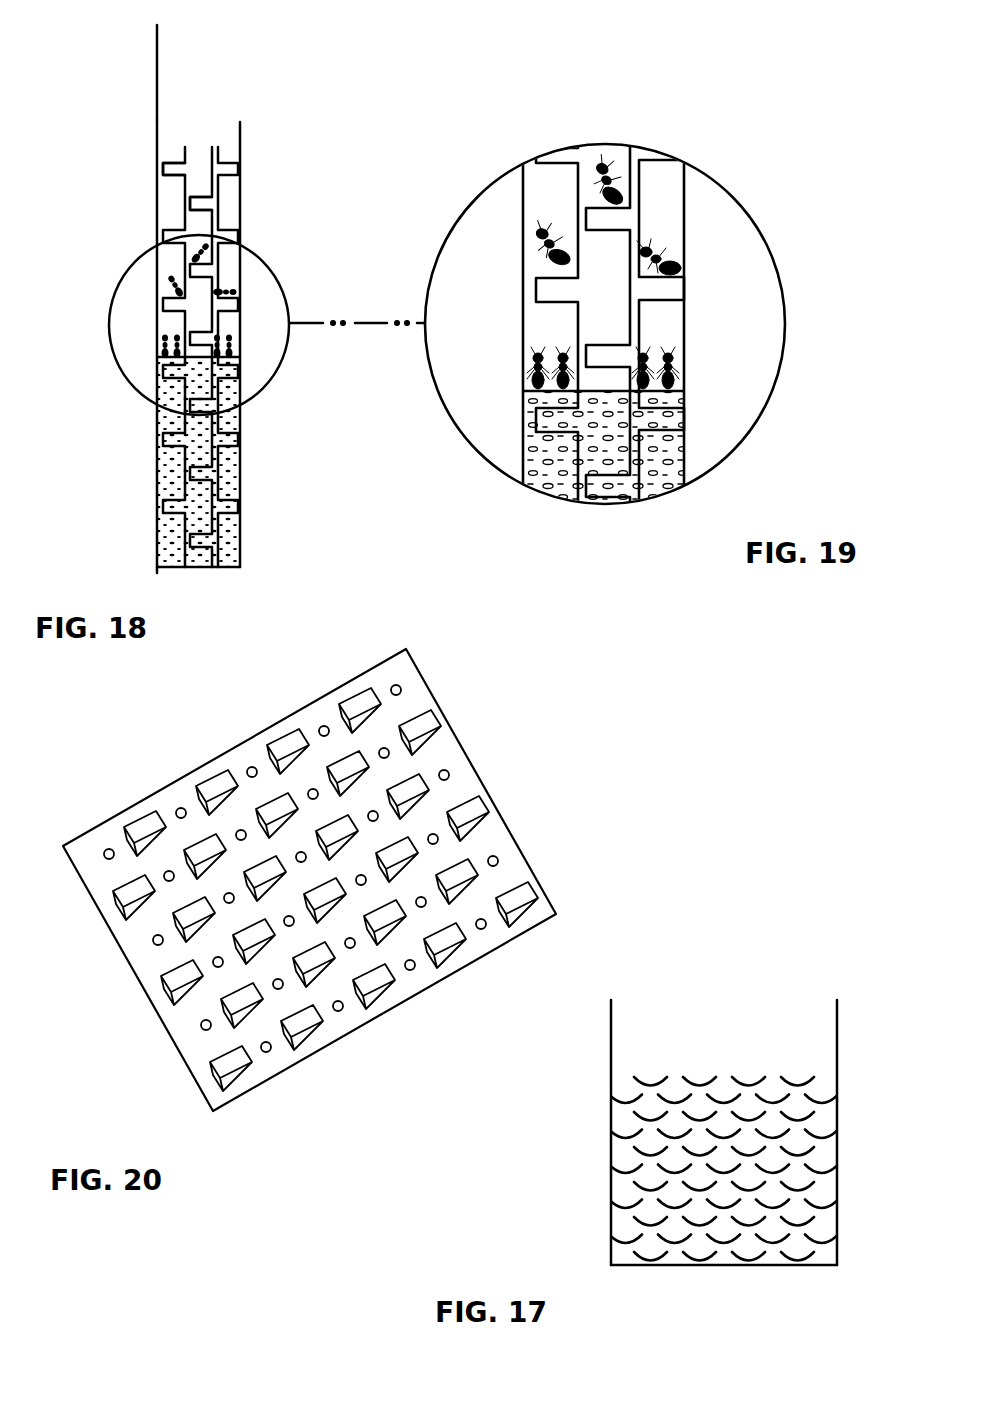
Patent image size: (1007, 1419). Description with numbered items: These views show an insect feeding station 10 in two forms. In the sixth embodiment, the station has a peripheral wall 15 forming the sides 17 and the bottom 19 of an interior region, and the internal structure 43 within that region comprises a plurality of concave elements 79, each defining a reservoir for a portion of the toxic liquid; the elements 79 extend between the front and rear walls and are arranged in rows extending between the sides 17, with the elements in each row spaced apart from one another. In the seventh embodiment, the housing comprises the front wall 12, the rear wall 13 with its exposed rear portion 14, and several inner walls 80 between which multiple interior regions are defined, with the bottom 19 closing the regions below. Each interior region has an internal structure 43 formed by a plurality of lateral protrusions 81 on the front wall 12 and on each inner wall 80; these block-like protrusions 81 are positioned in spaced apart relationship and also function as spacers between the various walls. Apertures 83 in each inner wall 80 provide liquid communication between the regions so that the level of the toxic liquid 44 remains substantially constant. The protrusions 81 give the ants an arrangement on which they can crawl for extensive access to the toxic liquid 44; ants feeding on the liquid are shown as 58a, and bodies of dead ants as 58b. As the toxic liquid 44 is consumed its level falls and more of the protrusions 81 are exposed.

In FIG. 18, the insect feeding station 10 is at (140, 68).
In FIG. 18, the front wall 12 is at (240, 132).
In FIG. 19, the front wall 12 is at (684, 182).
In FIG. 18, the rear wall 13 is at (157, 60).
In FIG. 18, the exposed rear portion 14 is at (157, 92).
In FIG. 17, the peripheral wall 15 is at (837, 1030).
In FIG. 17, the sides 17 is at (838, 1218).
In FIG. 18, the bottom 19 is at (183, 568).
In FIG. 17, the bottom 19 is at (782, 1266).
In FIG. 18, the internal structure 43 is at (202, 133).
In FIG. 17, the internal structure 43 is at (660, 1068).
In FIG. 18, the toxic liquid 44 is at (238, 488).
In FIG. 19, the toxic liquid 44 is at (690, 452).
In FIG. 19, the ants feeding on the toxic liquid 58a is at (690, 345).
In FIG. 19, the bodies of dead ants 58b is at (686, 268).
In FIG. 17, the concave elements 79 is at (812, 1082).
In FIG. 18, the inner walls 80 is at (157, 150).
In FIG. 19, the inner walls 80 is at (650, 246).
In FIG. 20, the inner walls 80 is at (93, 823).
In FIG. 18, the lateral protrusions 81 is at (172, 180).
In FIG. 20, the lateral protrusions 81 is at (425, 716).
In FIG. 20, the apertures 83 is at (499, 861).